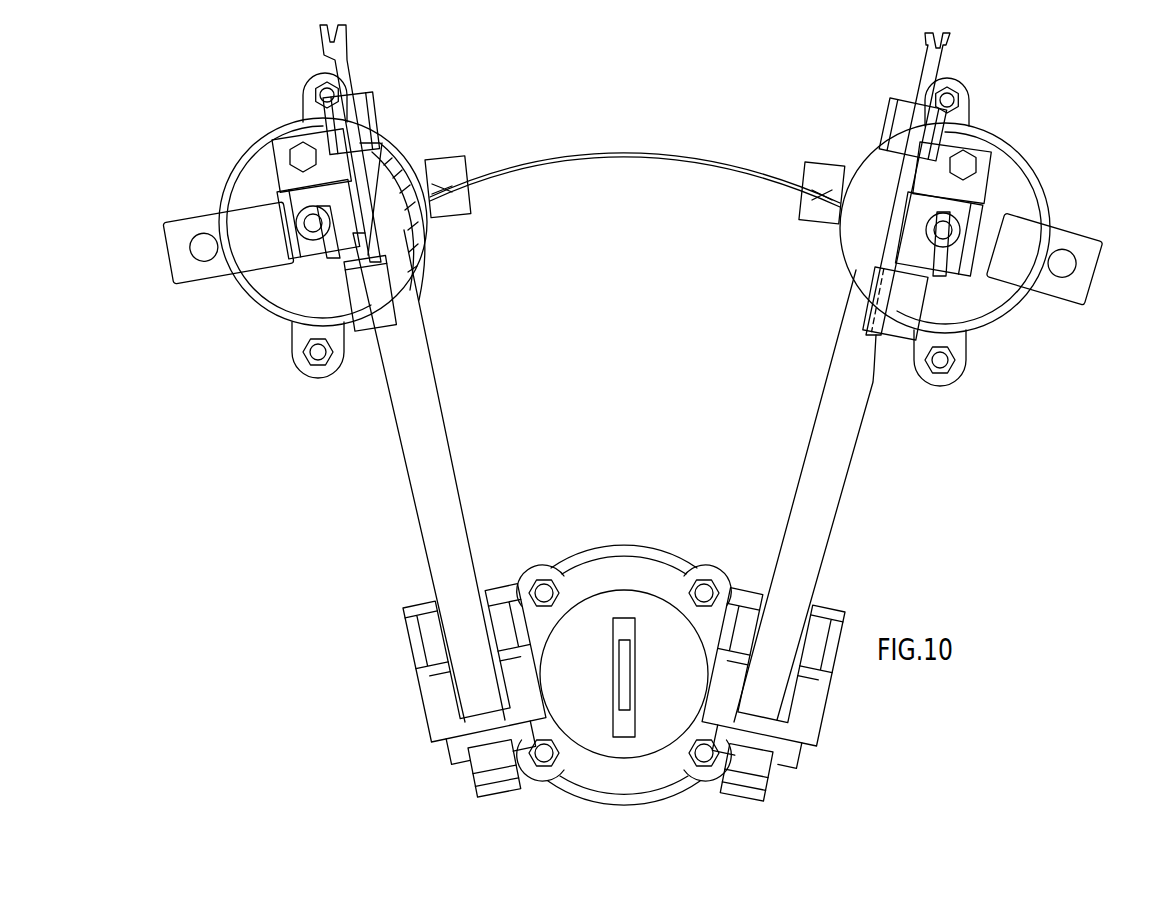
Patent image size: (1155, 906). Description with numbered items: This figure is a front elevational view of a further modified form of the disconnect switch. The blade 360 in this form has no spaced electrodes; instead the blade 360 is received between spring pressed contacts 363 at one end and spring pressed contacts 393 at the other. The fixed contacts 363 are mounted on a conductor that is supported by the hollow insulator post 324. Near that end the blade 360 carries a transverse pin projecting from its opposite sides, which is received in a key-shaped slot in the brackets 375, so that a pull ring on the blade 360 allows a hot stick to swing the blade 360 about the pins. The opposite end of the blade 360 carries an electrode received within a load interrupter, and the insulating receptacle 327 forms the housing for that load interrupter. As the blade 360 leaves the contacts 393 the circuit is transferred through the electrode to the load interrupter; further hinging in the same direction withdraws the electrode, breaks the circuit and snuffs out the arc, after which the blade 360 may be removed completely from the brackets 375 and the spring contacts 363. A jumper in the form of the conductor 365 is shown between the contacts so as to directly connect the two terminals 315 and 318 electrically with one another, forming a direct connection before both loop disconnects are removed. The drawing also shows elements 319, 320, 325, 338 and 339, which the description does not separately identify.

The terminal 315 is at (183, 289).
The terminal 318 is at (878, 287).
The left actuating arm 319 is at (398, 470).
The right actuating arm 320 is at (850, 497).
The hollow insulator post 324 is at (632, 545).
The left rotary switch 325 is at (232, 169).
The insulating receptacle 327 is at (1040, 190).
The dial disc 338 is at (579, 622).
The slot 339 is at (663, 655).
The blade 360 is at (447, 447).
The spring pressed contacts 363 is at (480, 765).
The conductor 365 is at (606, 164).
The brackets 375 is at (415, 611).
The spring pressed contacts 393 is at (380, 130).